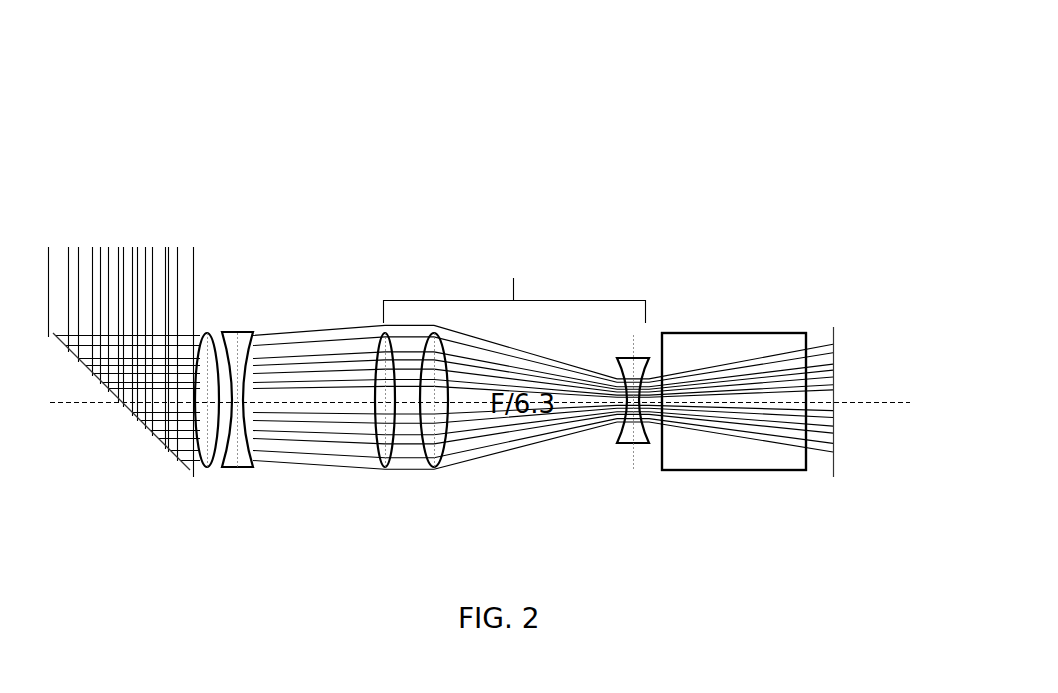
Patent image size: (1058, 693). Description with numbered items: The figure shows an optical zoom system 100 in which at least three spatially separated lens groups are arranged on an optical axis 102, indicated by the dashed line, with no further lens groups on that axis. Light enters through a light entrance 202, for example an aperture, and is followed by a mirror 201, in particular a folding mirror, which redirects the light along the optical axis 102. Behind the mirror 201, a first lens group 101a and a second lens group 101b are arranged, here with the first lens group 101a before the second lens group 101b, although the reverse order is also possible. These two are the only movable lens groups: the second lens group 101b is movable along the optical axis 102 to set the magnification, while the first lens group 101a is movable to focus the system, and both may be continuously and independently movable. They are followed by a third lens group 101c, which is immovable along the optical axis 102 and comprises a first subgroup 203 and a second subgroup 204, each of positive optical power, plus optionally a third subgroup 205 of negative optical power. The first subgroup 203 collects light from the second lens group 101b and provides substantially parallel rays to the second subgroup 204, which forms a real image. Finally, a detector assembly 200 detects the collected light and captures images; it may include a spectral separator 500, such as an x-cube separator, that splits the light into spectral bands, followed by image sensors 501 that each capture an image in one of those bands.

The optical zoom system 100 is at (290, 112).
The first lens group 101a is at (208, 320).
The second lens group 101b is at (245, 320).
The third lens group 101c is at (515, 278).
The optical axis 102 is at (505, 401).
The detector assembly 200 is at (786, 316).
The mirror 201 is at (140, 423).
The light entrance 202 is at (97, 238).
The first subgroup 203 is at (387, 470).
The second subgroup 204 is at (440, 470).
The third subgroup 205 is at (632, 467).
The spectral separator 500 is at (753, 472).
The image sensors 501 is at (835, 435).